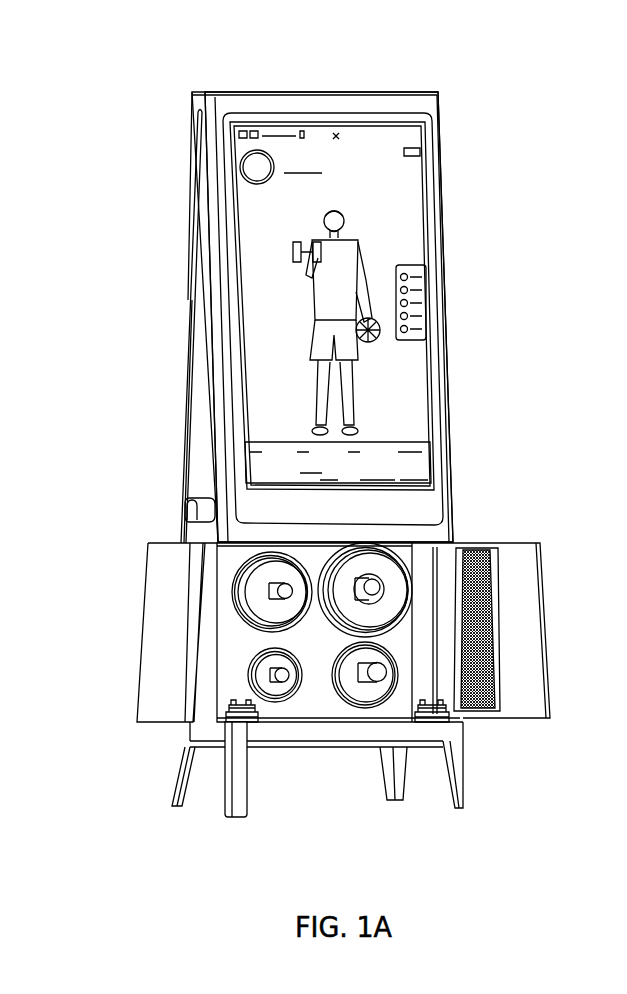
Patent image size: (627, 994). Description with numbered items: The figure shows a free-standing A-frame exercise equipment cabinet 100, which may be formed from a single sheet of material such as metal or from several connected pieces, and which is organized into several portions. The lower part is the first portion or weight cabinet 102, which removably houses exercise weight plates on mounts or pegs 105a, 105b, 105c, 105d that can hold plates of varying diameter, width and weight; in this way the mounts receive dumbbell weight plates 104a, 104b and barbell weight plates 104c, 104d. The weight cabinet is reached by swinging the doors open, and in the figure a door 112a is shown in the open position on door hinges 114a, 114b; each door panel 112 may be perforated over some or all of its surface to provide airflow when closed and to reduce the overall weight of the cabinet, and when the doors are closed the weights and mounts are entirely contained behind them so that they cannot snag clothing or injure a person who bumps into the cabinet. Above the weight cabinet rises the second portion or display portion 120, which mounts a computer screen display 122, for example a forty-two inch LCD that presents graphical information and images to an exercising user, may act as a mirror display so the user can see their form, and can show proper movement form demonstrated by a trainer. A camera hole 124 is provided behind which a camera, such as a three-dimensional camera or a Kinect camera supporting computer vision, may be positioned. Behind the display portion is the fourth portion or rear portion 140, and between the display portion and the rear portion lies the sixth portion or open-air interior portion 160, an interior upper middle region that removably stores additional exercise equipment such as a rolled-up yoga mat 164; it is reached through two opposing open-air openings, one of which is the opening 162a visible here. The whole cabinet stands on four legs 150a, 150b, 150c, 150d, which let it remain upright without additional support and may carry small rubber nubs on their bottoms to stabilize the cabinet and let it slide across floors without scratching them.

The free-standing A-frame exercise equipment cabinet 100 is at (462, 50).
The first portion (weight cabinet) 102 is at (310, 690).
The dumbbell weight plate 104a is at (253, 663).
The dumbbell weight plate 104b is at (363, 690).
The barbell weight plate 104c is at (267, 608).
The barbell weight plate 104d is at (390, 600).
The mount (peg) 105a is at (267, 675).
The mount (peg) 105b is at (382, 670).
The mount (peg) 105c is at (270, 590).
The mount (peg) 105d is at (382, 583).
The door panel 112 is at (547, 620).
The door 112a is at (165, 570).
The door hinge 114a is at (222, 713).
The door hinge 114b is at (447, 710).
The second portion (display portion) 120 is at (420, 112).
The computer screen display 122 is at (417, 172).
The camera hole 124 is at (342, 508).
The fourth portion (rear portion) 140 is at (192, 120).
The leg 150a is at (465, 793).
The leg 150b is at (248, 813).
The leg 150c is at (183, 802).
The leg 150d is at (397, 788).
The sixth portion (open-air interior portion) 160 is at (203, 318).
The opening 162a is at (205, 443).
The rolled-up yoga mat 164 is at (183, 505).